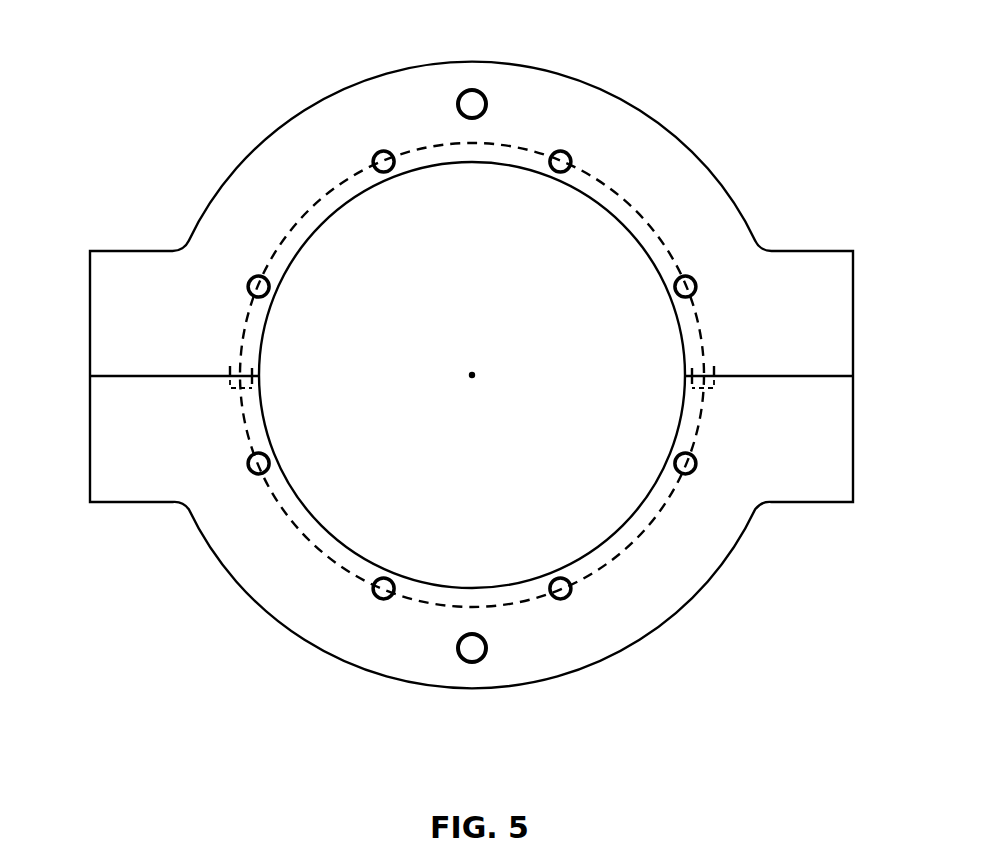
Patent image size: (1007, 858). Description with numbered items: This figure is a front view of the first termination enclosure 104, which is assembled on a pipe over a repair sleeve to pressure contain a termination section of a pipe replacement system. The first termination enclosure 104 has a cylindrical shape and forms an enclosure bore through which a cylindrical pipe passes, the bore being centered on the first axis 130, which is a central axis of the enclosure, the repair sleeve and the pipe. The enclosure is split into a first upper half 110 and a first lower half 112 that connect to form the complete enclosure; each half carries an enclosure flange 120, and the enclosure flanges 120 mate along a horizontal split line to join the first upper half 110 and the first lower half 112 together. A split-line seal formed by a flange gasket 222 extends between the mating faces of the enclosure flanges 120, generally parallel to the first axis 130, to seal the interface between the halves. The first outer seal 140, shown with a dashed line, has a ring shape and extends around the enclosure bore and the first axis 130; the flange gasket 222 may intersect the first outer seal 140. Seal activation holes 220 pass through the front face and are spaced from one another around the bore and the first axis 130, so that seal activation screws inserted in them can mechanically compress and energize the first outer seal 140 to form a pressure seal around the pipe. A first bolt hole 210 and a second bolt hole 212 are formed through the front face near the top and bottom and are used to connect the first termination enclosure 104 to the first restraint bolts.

The first termination enclosure 104 is at (290, 110).
The first upper half 110 is at (374, 75).
The first lower half 112 is at (208, 548).
The enclosure flange 120 is at (853, 282).
The first axis 130 is at (473, 376).
The first outer seal 140 is at (638, 204).
The first bolt hole 210 is at (472, 86).
The second bolt hole 212 is at (472, 666).
The seal activation holes 220 is at (562, 148).
The flange gasket 222 is at (230, 369).